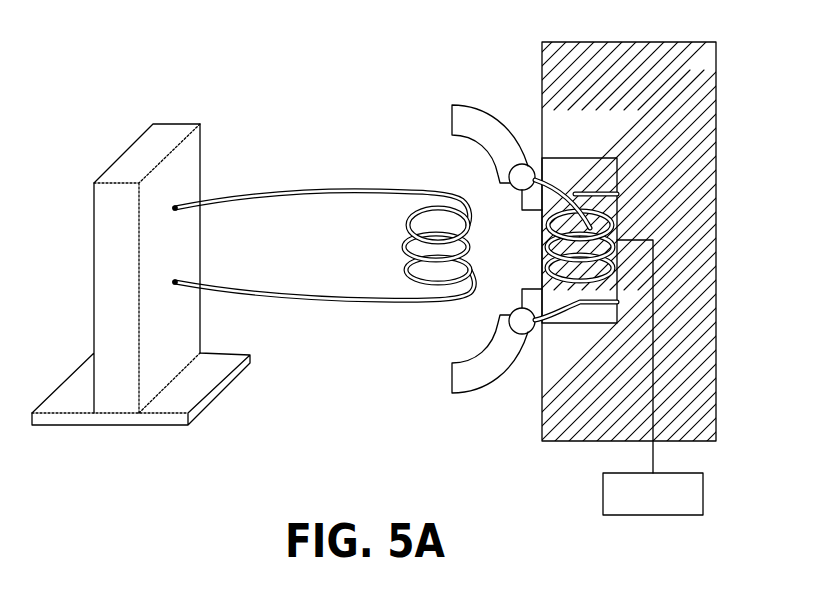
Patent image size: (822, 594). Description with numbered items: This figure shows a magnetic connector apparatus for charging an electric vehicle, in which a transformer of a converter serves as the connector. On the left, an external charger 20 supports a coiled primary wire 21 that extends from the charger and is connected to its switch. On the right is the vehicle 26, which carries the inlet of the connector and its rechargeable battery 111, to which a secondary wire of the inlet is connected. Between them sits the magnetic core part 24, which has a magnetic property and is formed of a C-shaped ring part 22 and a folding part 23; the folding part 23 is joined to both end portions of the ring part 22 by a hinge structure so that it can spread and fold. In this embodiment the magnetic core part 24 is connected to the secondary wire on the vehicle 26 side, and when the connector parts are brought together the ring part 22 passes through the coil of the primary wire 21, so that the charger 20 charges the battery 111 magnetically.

The external charger 20 is at (94, 313).
The primary wire 21 is at (288, 176).
The ring part 22 is at (597, 228).
The folding part 23 is at (480, 128).
The magnetic core part 24 is at (537, 64).
The vehicle 26 is at (557, 413).
The rechargeable battery 111 is at (703, 495).